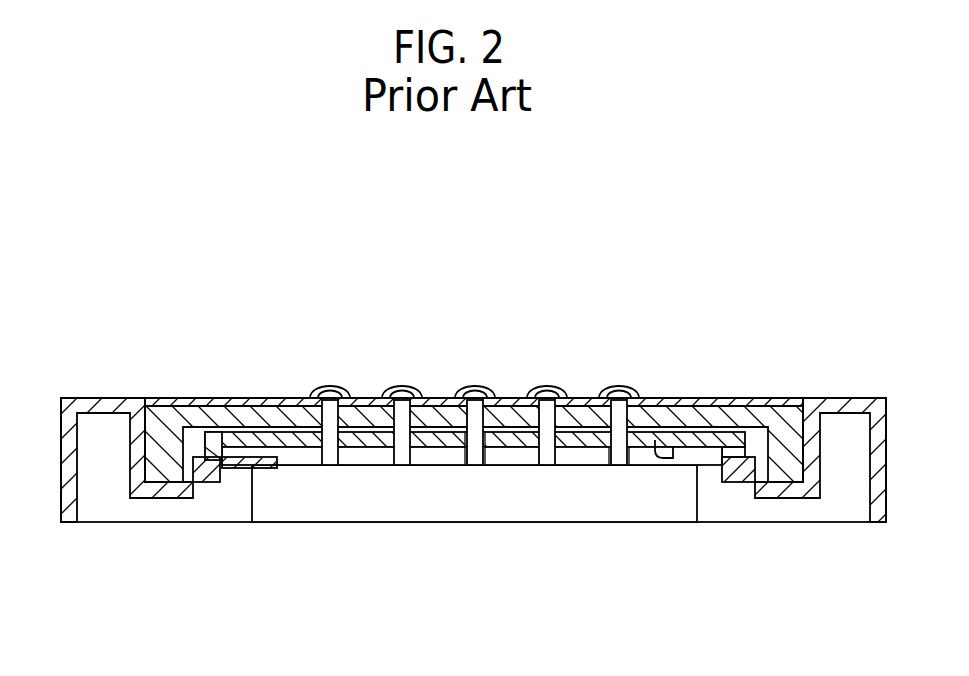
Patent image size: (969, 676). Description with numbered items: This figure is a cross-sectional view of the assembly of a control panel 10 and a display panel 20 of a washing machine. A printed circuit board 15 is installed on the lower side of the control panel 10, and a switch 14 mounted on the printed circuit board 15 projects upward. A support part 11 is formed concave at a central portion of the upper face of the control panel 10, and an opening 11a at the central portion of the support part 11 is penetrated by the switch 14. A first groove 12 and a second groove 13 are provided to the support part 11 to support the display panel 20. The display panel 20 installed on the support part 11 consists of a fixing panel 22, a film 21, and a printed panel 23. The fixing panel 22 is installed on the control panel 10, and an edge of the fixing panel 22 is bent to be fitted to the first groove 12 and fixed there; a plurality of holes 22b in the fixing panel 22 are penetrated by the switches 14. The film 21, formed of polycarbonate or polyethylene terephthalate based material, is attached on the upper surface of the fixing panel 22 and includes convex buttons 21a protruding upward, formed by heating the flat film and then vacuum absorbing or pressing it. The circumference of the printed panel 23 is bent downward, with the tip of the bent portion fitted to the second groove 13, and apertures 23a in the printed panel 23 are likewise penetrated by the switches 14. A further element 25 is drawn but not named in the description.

The control panel 10 is at (98, 398).
The support part 11 is at (270, 465).
The opening 11a is at (656, 448).
The first groove 12 is at (197, 462).
The second groove 13 is at (235, 463).
The switch 14 is at (617, 452).
The printed circuit board 15 is at (495, 498).
The display panel 20 is at (474, 356).
The film 21 is at (193, 398).
The buttons 21a is at (535, 390).
The fixing panel 22 is at (278, 415).
The holes 22b is at (462, 398).
The printed panel 23 is at (205, 297).
The apertures 23a is at (483, 440).
The cover strip 25 is at (580, 420).